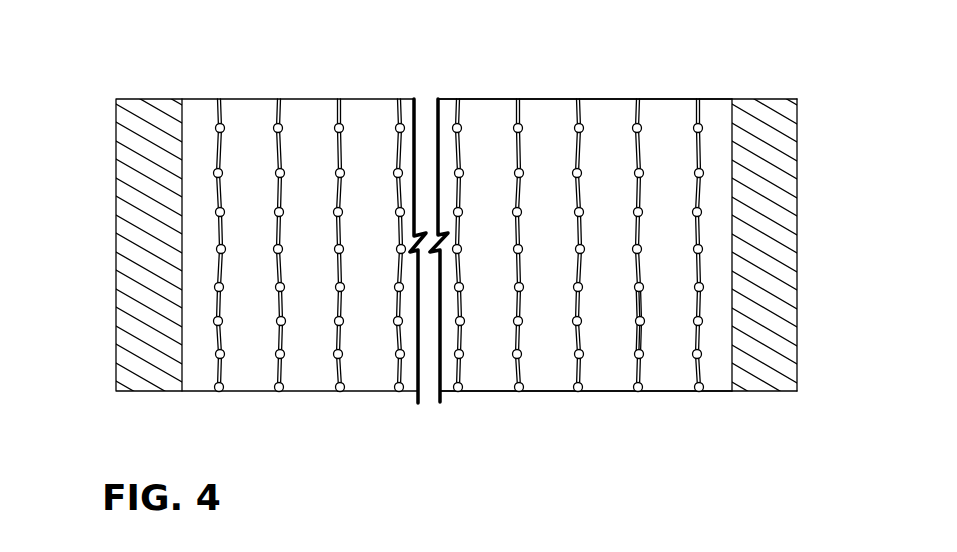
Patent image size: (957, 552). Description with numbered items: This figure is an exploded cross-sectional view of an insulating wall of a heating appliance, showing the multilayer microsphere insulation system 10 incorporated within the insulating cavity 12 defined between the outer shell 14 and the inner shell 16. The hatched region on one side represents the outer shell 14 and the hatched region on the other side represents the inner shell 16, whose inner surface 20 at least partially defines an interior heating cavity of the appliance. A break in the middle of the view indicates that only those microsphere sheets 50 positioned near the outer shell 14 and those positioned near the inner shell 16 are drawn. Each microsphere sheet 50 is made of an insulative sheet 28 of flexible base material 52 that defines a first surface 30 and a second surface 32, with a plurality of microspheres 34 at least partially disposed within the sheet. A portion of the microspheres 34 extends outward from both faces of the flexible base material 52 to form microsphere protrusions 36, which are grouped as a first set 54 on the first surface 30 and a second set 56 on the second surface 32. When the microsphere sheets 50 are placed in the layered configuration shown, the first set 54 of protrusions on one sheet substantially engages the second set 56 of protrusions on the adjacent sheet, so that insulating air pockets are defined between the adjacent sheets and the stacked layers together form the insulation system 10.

The multilayer microsphere insulation system 10 is at (210, 66).
The insulating cavity 12 is at (668, 135).
The outer shell 14 is at (130, 203).
The inner shell 16 is at (777, 218).
The inner surface 20 is at (797, 288).
The insulative sheet 28 is at (631, 311).
The first surface 30 is at (633, 112).
The second surface 32 is at (645, 337).
The microspheres 34 is at (286, 348).
The microsphere protrusions 36 is at (517, 352).
The microsphere sheets 50 is at (337, 93).
The flexible base material 52 is at (227, 345).
The first set of microsphere protrusions 54 is at (628, 175).
The second set of microsphere protrusions 56 is at (650, 211).